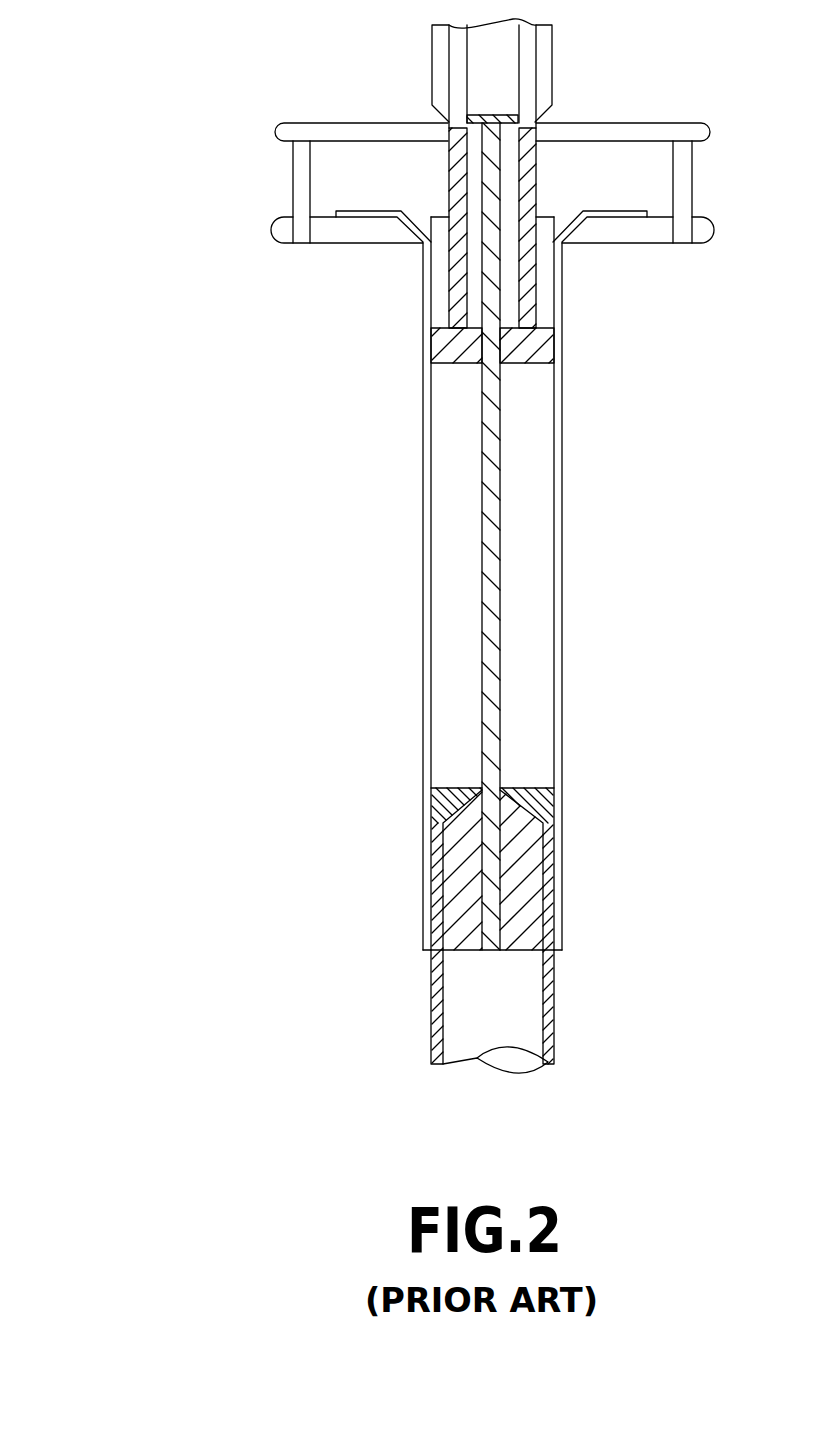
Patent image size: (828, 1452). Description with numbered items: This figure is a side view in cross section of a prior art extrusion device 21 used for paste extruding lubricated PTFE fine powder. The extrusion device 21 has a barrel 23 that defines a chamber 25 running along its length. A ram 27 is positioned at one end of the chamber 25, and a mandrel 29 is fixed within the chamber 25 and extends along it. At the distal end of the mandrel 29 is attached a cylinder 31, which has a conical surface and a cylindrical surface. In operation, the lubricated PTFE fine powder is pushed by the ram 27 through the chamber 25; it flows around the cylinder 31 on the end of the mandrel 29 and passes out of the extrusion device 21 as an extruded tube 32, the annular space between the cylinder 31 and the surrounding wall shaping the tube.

The extrusion device 21 is at (300, 660).
The barrel 23 is at (565, 572).
The chamber 25 is at (527, 440).
The ram 27 is at (523, 353).
The mandrel 29 is at (500, 707).
The cylinder 31 is at (520, 887).
The extruded tube 32 is at (432, 1018).